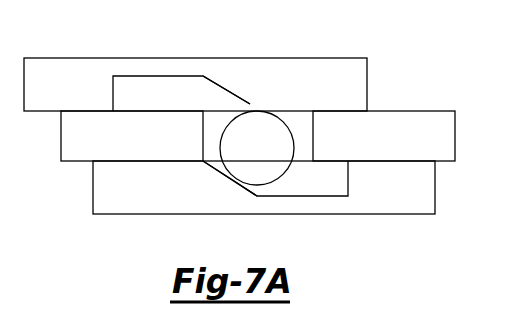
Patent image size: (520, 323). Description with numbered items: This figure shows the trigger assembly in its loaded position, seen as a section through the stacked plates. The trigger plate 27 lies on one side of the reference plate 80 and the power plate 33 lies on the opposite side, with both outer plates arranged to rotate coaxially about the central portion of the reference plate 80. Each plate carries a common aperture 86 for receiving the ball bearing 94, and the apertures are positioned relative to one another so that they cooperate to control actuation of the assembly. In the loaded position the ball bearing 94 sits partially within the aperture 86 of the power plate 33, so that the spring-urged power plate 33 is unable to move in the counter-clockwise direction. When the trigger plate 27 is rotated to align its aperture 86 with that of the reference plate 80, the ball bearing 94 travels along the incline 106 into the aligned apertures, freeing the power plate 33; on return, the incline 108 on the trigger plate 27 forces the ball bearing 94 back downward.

The trigger plate 27 is at (348, 58).
The reference plate 80 is at (426, 111).
The power plate 33 is at (435, 185).
The aperture 86 is at (166, 105).
The ball bearing 94 is at (264, 160).
The incline 108 is at (250, 102).
The incline 106 is at (220, 176).